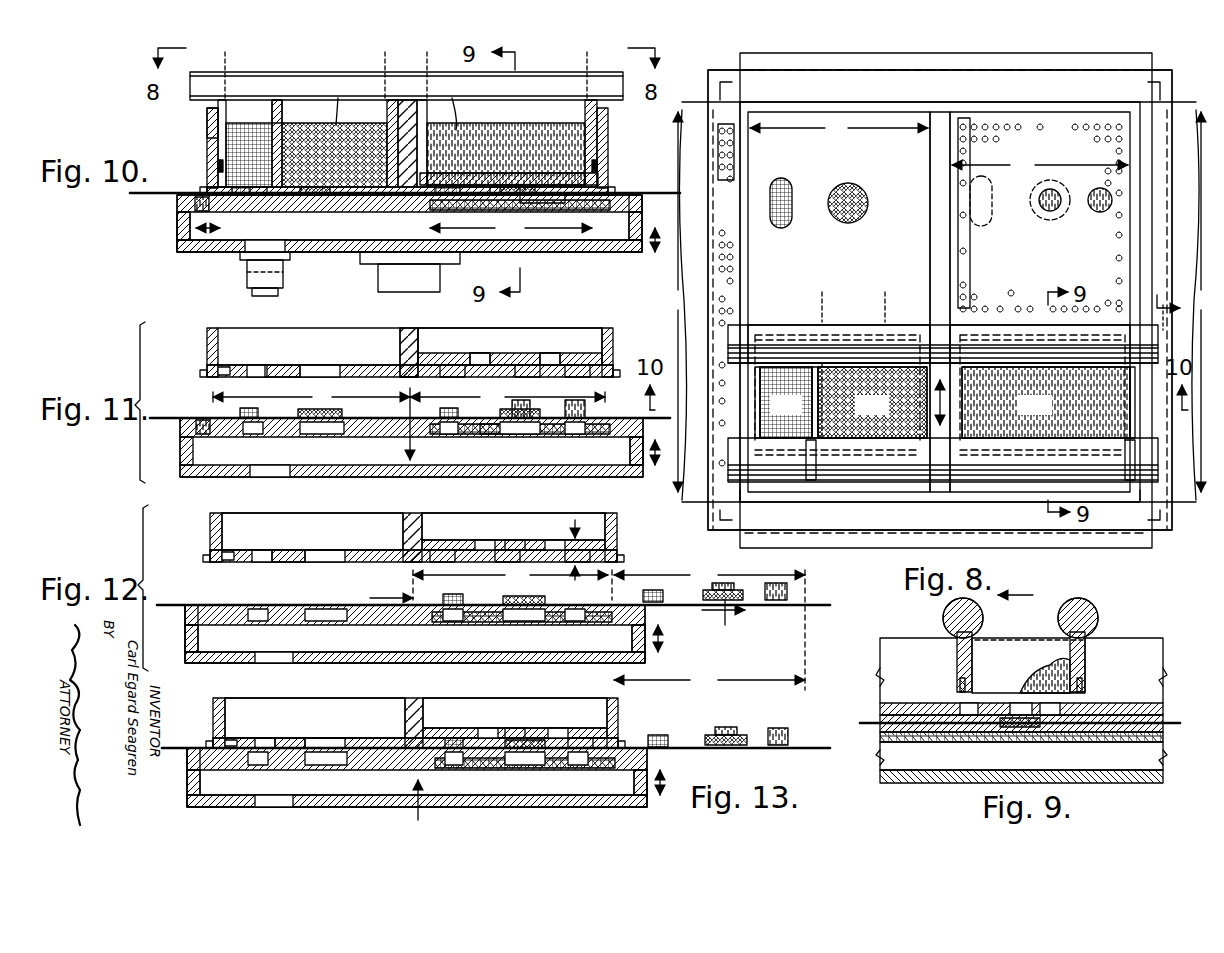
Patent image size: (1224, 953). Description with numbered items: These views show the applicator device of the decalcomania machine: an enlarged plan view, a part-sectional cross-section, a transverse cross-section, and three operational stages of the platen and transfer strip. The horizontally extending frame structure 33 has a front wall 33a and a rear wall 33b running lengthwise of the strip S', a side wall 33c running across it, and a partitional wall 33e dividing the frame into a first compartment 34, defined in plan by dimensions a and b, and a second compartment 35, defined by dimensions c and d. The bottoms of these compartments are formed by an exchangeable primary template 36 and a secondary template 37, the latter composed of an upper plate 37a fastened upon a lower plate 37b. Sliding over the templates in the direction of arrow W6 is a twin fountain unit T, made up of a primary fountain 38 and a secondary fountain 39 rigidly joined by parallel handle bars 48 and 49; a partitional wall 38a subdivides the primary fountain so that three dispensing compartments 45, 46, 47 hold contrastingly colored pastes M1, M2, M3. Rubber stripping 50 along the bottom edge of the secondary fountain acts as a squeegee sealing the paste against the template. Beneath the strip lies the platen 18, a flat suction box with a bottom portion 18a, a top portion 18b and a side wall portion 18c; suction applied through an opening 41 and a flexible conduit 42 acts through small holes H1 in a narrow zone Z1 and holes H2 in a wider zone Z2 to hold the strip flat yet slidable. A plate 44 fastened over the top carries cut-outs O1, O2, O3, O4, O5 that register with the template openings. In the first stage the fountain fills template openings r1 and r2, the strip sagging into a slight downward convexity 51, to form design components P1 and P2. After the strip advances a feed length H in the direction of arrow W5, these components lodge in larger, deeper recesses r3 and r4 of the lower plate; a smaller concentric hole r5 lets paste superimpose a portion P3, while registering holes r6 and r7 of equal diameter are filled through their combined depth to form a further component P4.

In FIG. 10, the platen 18 is at (200, 257).
In FIG. 11, the platen 18 is at (205, 478).
In FIG. 12, the platen 18 is at (208, 666).
In FIG. 13, the platen 18 is at (190, 795).
In FIG. 8, the platen 18 is at (706, 517).
In FIG. 9, the platen 18 is at (920, 785).
In FIG. 10, the bottom portion 18a is at (610, 253).
In FIG. 12, the bottom portion 18a is at (578, 676).
In FIG. 13, the bottom portion 18a is at (590, 808).
In FIG. 10, the top portion 18b is at (628, 215).
In FIG. 11, the top portion 18b is at (628, 440).
In FIG. 12, the top portion 18b is at (630, 628).
In FIG. 13, the top portion 18b is at (633, 772).
In FIG. 10, the side wall portion 18c is at (178, 245).
In FIG. 12, the side wall portion 18c is at (188, 635).
In FIG. 13, the side wall portion 18c is at (209, 782).
In FIG. 10, the frame structure 33 is at (205, 140).
In FIG. 11, the frame structure 33 is at (205, 352).
In FIG. 12, the frame structure 33 is at (208, 525).
In FIG. 13, the frame structure 33 is at (211, 718).
In FIG. 8, the frame structure 33 is at (822, 100).
In FIG. 9, the frame structure 33 is at (885, 636).
In FIG. 8, the front wall 33a is at (943, 483).
In FIG. 8, the rear wall 33b is at (940, 108).
In FIG. 11, the side wall 33c is at (398, 340).
In FIG. 8, the side wall 33c is at (748, 292).
In FIG. 8, the partitional wall 33e is at (930, 185).
In FIG. 12, the first compartment 34 is at (315, 525).
In FIG. 13, the first compartment 34 is at (318, 712).
In FIG. 11, the second compartment 35 is at (548, 340).
In FIG. 12, the second compartment 35 is at (505, 525).
In FIG. 13, the second compartment 35 is at (520, 726).
In FIG. 10, the primary template 36 is at (205, 190).
In FIG. 11, the primary template 36 is at (285, 362).
In FIG. 12, the primary template 36 is at (290, 548).
In FIG. 13, the primary template 36 is at (292, 736).
In FIG. 10, the secondary template 37 is at (600, 186).
In FIG. 11, the secondary template 37 is at (455, 352).
In FIG. 12, the secondary template 37 is at (480, 538).
In FIG. 13, the secondary template 37 is at (470, 726).
In FIG. 10, the upper plate 37a is at (500, 180).
In FIG. 10, the lower plate 37b is at (500, 200).
In FIG. 10, the primary fountain 38 is at (385, 60).
In FIG. 8, the primary fountain 38 is at (839, 358).
In FIG. 10, the partitional wall 38a is at (282, 112).
In FIG. 8, the partitional wall 38a is at (805, 365).
In FIG. 10, the secondary fountain 39 is at (587, 60).
In FIG. 8, the secondary fountain 39 is at (1015, 310).
In FIG. 10, the opening 41 is at (275, 248).
In FIG. 11, the opening 41 is at (275, 472).
In FIG. 12, the opening 41 is at (272, 660).
In FIG. 13, the opening 41 is at (275, 802).
In FIG. 10, the flexible conduit 42 is at (248, 290).
In FIG. 10, the plate 44 is at (640, 195).
In FIG. 12, the plate 44 is at (185, 612).
In FIG. 13, the plate 44 is at (188, 756).
In FIG. 10, the dispensing compartment 45 is at (249, 145).
In FIG. 8, the dispensing compartment 45 is at (786, 402).
In FIG. 10, the dispensing compartment 46 is at (334, 145).
In FIG. 8, the dispensing compartment 46 is at (872, 402).
In FIG. 10, the dispensing compartment 47 is at (506, 145).
In FIG. 8, the dispensing compartment 47 is at (1046, 402).
In FIG. 10, the handle bar 48 is at (218, 166).
In FIG. 8, the handle bar 48 is at (730, 400).
In FIG. 9, the handle bar 48 is at (945, 620).
In FIG. 10, the handle bar 49 is at (320, 200).
In FIG. 8, the handle bar 49 is at (812, 460).
In FIG. 9, the handle bar 49 is at (1098, 620).
In FIG. 10, the rubber stripping 50 is at (597, 165).
In FIG. 8, the rubber stripping 50 is at (1130, 395).
In FIG. 9, the rubber stripping 50 is at (960, 700).
In FIG. 10, the downward convexity 51 is at (250, 200).
In FIG. 10, the twin fountain unit T is at (208, 70).
In FIG. 8, the twin fountain unit T is at (862, 325).
In FIG. 9, the twin fountain unit T is at (1075, 600).
In FIG. 10, the edible paste M1 is at (215, 100).
In FIG. 8, the edible paste M1 is at (770, 375).
In FIG. 10, the edible paste M2 is at (335, 103).
In FIG. 8, the edible paste M2 is at (850, 370).
In FIG. 10, the edible paste M3 is at (446, 106).
In FIG. 8, the edible paste M3 is at (1050, 370).
In FIG. 10, the strip S' is at (149, 210).
In FIG. 11, the strip S' is at (180, 396).
In FIG. 12, the strip S' is at (186, 586).
In FIG. 13, the strip S' is at (188, 739).
In FIG. 8, the strip S' is at (928, 289).
In FIG. 11, the stepwise feed length H is at (409, 420).
In FIG. 12, the stepwise feed length H is at (587, 628).
In FIG. 10, the suction holes H1 is at (192, 200).
In FIG. 11, the suction holes H1 is at (205, 436).
In FIG. 8, the suction holes H1 is at (722, 168).
In FIG. 10, the suction holes H2 is at (555, 200).
In FIG. 11, the suction holes H2 is at (505, 436).
In FIG. 8, the suction holes H2 is at (960, 300).
In FIG. 11, the component portion P1 is at (240, 410).
In FIG. 12, the component portion P1 is at (452, 594).
In FIG. 13, the component portion P1 is at (455, 738).
In FIG. 8, the component portion P1 is at (792, 195).
In FIG. 11, the component portion P2 is at (300, 410).
In FIG. 12, the component portion P2 is at (530, 596).
In FIG. 13, the component portion P2 is at (530, 740).
In FIG. 8, the component portion P2 is at (842, 184).
In FIG. 11, the portion P3 is at (515, 400).
In FIG. 8, the portion P3 is at (1060, 192).
In FIG. 11, the further component P4 is at (588, 410).
In FIG. 8, the further component P4 is at (1098, 212).
In FIG. 11, the opening O1 is at (255, 436).
In FIG. 12, the opening O1 is at (252, 620).
In FIG. 13, the opening O1 is at (255, 766).
In FIG. 11, the opening O2 is at (330, 436).
In FIG. 12, the opening O2 is at (330, 620).
In FIG. 13, the opening O2 is at (332, 766).
In FIG. 11, the opening O3 is at (445, 436).
In FIG. 12, the opening O3 is at (448, 620).
In FIG. 13, the opening O3 is at (452, 766).
In FIG. 11, the opening O4 is at (522, 436).
In FIG. 12, the opening O4 is at (515, 620).
In FIG. 13, the opening O4 is at (520, 766).
In FIG. 11, the opening O5 is at (573, 436).
In FIG. 12, the opening O5 is at (572, 620).
In FIG. 13, the opening O5 is at (572, 766).
In FIG. 11, the opening r1 is at (250, 368).
In FIG. 12, the opening r1 is at (252, 562).
In FIG. 13, the opening r1 is at (255, 744).
In FIG. 11, the opening r2 is at (330, 368).
In FIG. 12, the opening r2 is at (325, 562).
In FIG. 13, the opening r2 is at (325, 744).
In FIG. 11, the opening r3 is at (460, 370).
In FIG. 12, the opening r3 is at (440, 548).
In FIG. 11, the opening r4 is at (535, 370).
In FIG. 12, the opening r4 is at (500, 548).
In FIG. 11, the hole r5 is at (505, 352).
In FIG. 12, the hole r5 is at (512, 540).
In FIG. 13, the hole r5 is at (510, 728).
In FIG. 11, the hole r6 is at (580, 370).
In FIG. 12, the hole r6 is at (580, 548).
In FIG. 13, the hole r6 is at (575, 742).
In FIG. 11, the hole r7 is at (575, 352).
In FIG. 10, the narrow zone Z1 is at (217, 231).
In FIG. 10, the wider zone Z2 is at (511, 231).
In FIG. 12, the arrow W5 is at (723, 621).
In FIG. 8, the arrow W5 is at (1165, 303).
In FIG. 8, the arrow W6 is at (935, 340).
In FIG. 8, the dimension a is at (839, 125).
In FIG. 8, the dimension b is at (674, 302).
In FIG. 8, the dimension c is at (1040, 161).
In FIG. 12, the dimension d is at (565, 548).
In FIG. 8, the dimension d is at (1207, 302).